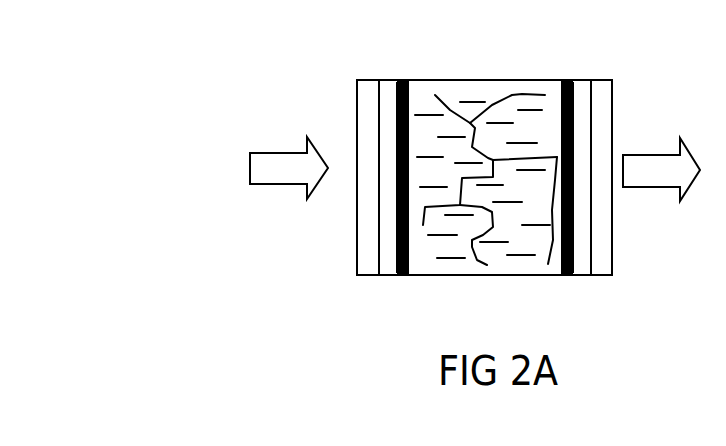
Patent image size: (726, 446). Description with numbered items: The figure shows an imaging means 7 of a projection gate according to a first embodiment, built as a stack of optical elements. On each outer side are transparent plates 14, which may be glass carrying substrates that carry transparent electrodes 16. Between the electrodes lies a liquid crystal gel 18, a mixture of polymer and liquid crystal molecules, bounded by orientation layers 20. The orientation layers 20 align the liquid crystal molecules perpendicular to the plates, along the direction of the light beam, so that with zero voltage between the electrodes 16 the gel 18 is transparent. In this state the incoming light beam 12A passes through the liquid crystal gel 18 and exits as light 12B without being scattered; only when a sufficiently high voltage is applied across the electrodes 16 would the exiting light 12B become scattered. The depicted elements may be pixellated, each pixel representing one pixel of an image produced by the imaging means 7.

The imaging means 7 is at (328, 309).
The incoming light beam 12A is at (272, 153).
The scattered light 12B is at (647, 155).
The transparent plates 14 is at (370, 80).
The transparent electrodes 16 is at (387, 80).
The liquid crystal gel 18 is at (453, 80).
The orientation layers 20 is at (395, 80).